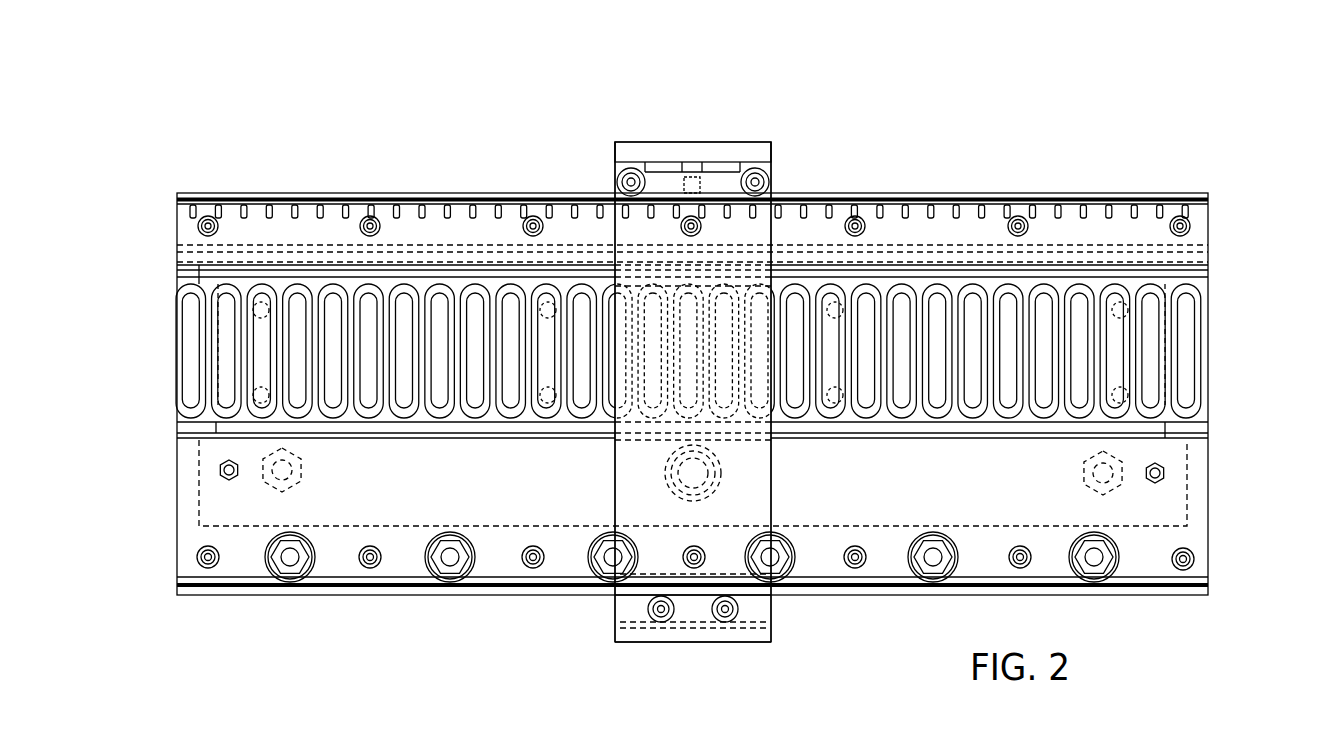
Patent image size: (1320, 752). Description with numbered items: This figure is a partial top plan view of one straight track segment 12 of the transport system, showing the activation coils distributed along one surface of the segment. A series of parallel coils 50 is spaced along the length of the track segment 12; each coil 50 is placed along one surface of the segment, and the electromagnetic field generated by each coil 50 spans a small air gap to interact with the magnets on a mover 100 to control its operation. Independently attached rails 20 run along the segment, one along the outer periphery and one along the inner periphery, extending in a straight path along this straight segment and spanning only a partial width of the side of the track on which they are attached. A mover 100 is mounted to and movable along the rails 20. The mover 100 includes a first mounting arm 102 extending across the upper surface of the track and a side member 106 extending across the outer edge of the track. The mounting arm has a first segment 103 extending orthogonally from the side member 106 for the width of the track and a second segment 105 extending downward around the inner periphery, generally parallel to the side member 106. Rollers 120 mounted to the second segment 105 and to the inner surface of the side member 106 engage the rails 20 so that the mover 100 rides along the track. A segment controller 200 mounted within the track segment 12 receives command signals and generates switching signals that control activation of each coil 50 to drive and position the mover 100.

The straight track segment 12 is at (1133, 103).
The rail 20 is at (835, 196).
The coil 50 is at (1197, 398).
The mover 100 is at (717, 643).
The first mounting arm 102 is at (632, 490).
The first segment 103 is at (753, 490).
The second segment 105 is at (643, 648).
The side member 106 is at (720, 134).
The roller 120 is at (615, 180).
The segment controller 200 is at (1215, 240).